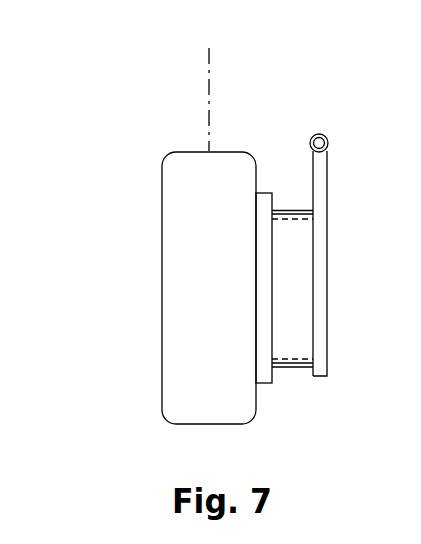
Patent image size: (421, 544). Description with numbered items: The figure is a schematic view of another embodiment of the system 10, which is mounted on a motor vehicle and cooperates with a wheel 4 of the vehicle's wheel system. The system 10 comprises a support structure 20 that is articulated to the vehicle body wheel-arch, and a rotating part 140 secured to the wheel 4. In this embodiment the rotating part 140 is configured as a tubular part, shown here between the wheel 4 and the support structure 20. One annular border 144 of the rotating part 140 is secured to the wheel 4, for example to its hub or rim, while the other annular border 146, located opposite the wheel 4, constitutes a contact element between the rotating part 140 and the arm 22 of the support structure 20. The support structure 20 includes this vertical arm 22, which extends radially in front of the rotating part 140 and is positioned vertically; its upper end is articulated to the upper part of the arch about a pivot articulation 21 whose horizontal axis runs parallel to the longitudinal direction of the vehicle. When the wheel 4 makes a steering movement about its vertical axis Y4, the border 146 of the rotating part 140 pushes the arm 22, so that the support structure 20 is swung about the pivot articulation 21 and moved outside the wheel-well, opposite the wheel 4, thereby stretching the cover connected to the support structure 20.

The wheel 4 is at (190, 172).
The system 10 is at (278, 98).
The support structure 20 is at (360, 202).
The pivot articulation 21 is at (318, 133).
The vertical arm 22 is at (318, 293).
The rotating part 140 is at (290, 345).
The annular border 144 is at (245, 328).
The annular border 146 is at (326, 321).
The vertical axis Y4 is at (215, 86).